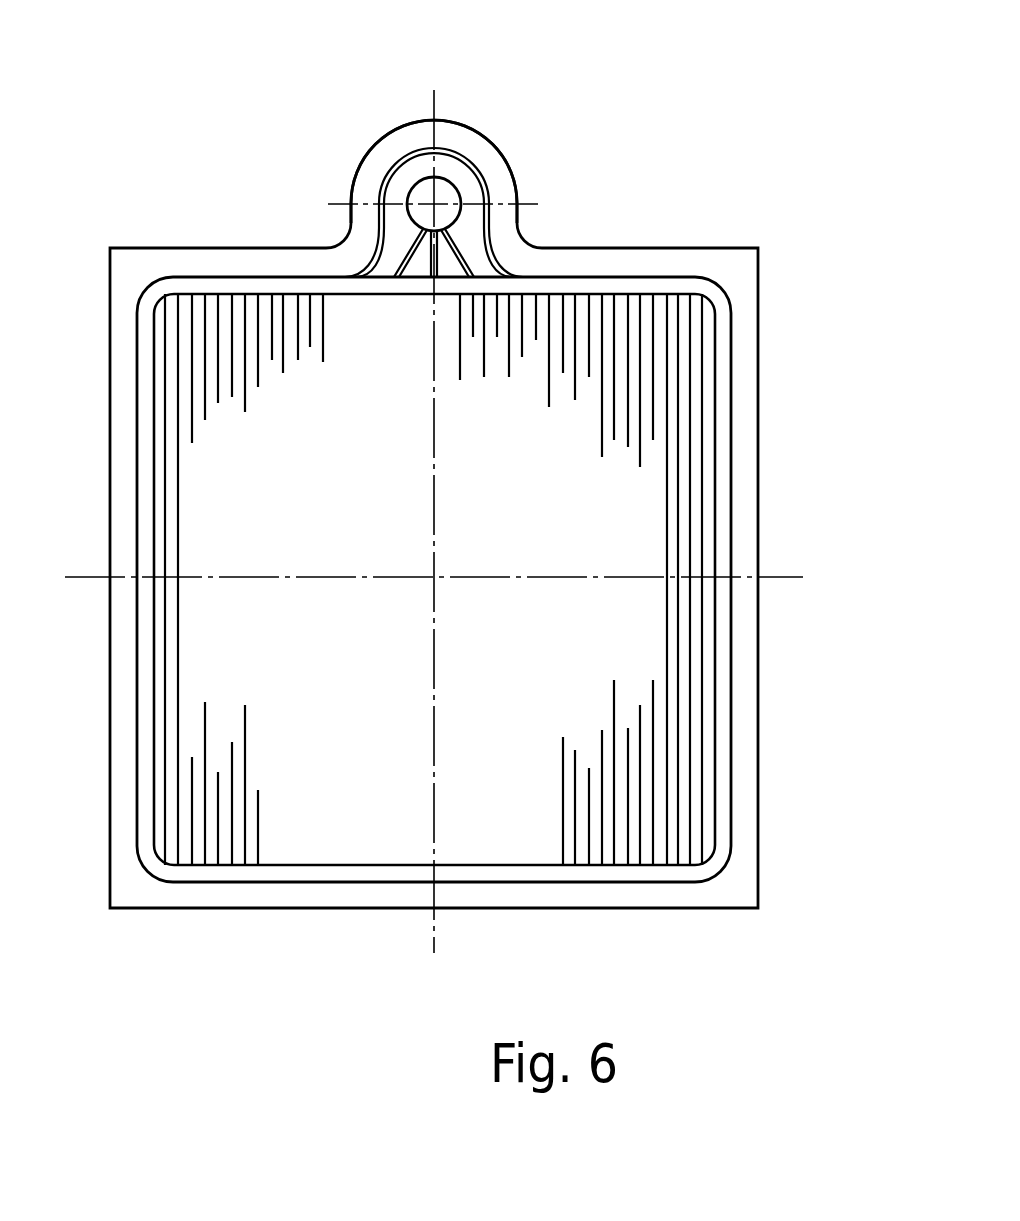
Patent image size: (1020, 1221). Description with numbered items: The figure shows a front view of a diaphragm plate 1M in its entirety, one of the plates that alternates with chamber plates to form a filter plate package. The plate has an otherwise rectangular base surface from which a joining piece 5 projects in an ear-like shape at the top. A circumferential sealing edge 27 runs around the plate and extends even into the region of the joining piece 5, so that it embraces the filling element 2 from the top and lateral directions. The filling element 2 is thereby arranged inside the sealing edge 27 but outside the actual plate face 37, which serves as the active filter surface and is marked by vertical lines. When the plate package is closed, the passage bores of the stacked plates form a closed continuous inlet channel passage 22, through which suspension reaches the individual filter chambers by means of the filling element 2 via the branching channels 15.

The diaphragm plate 1M is at (764, 486).
The joining piece 5 is at (358, 151).
The circumferential sealing edge 27 is at (603, 260).
The filling element 2 is at (412, 170).
The inlet channel passage 22 is at (440, 193).
The branching channels 15 is at (410, 250).
The plate face 37 is at (655, 625).